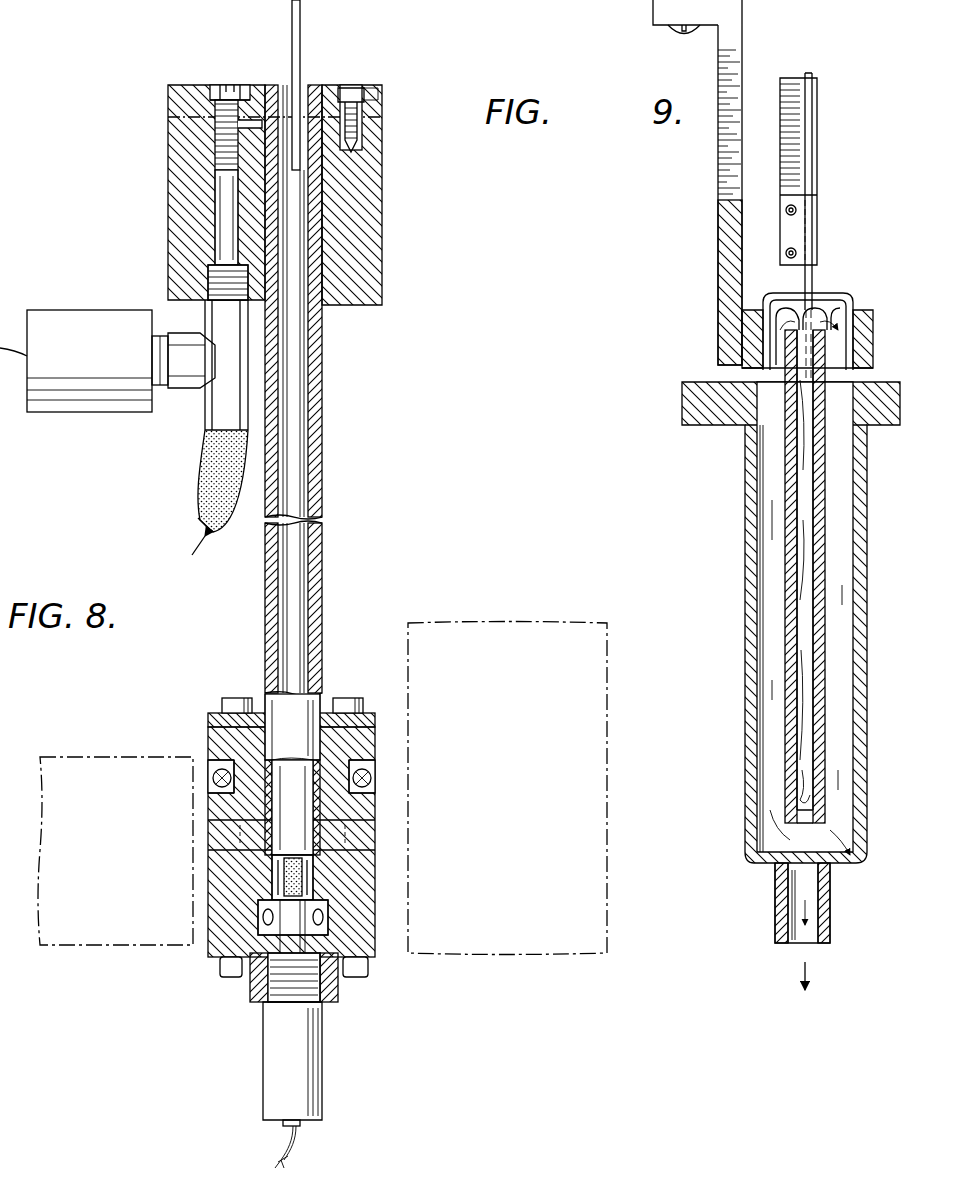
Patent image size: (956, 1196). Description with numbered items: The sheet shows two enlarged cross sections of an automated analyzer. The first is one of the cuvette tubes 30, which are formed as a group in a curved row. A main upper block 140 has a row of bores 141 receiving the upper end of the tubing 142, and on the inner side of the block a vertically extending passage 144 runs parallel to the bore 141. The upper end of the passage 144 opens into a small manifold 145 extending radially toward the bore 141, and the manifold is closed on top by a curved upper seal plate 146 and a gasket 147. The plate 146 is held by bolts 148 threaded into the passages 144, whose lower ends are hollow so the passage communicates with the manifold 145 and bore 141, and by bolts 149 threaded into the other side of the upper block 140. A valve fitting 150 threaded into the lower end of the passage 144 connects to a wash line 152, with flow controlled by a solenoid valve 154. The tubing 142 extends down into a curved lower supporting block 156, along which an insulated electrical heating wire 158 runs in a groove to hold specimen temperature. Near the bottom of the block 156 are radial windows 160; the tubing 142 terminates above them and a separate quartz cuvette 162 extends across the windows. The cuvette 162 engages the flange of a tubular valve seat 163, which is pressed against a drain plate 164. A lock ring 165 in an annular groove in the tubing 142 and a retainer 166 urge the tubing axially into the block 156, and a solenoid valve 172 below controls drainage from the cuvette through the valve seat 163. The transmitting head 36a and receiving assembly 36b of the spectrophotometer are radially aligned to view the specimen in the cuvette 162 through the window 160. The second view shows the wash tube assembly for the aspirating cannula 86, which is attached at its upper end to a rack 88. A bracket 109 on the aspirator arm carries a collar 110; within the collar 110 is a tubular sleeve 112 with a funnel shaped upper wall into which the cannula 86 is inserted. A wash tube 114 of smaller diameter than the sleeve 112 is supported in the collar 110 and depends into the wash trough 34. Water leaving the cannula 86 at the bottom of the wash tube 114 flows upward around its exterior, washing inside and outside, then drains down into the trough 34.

In FIG. 8, the cuvette tubes 30 is at (155, 76).
In FIG. 9, the wash trough 34 is at (752, 500).
In FIG. 8, the transmitting head 36a is at (100, 756).
In FIG. 8, the receiving assembly 36b is at (425, 954).
In FIG. 8, the aspirating cannula 86 is at (300, 38).
In FIG. 9, the aspirating cannula 86 is at (812, 282).
In FIG. 9, the rack 88 is at (798, 194).
In FIG. 9, the bracket 109 is at (722, 235).
In FIG. 9, the collar 110 is at (762, 340).
In FIG. 9, the tubular sleeve 112 is at (840, 302).
In FIG. 9, the wash tube 114 is at (790, 570).
In FIG. 8, the main upper block 140 is at (368, 246).
In FIG. 8, the bores 141 is at (318, 222).
In FIG. 8, the tubing 142 is at (315, 412).
In FIG. 8, the vertically extending passages 144 is at (222, 212).
In FIG. 8, the manifold 145 is at (256, 117).
In FIG. 8, the upper seal plate 146 is at (333, 92).
In FIG. 8, the gasket 147 is at (362, 120).
In FIG. 8, the bolts 148 is at (216, 85).
In FIG. 8, the bolts 149 is at (378, 94).
In FIG. 8, the valve fitting 150 is at (210, 418).
In FIG. 8, the wash line 152 is at (222, 487).
In FIG. 8, the solenoid valve 154 is at (76, 322).
In FIG. 8, the lower supporting block 156 is at (210, 742).
In FIG. 8, the insulated electrical heating wire 158 is at (371, 784).
In FIG. 8, the windows 160 is at (372, 828).
In FIG. 8, the tubular cuvette 162 is at (280, 815).
In FIG. 8, the tubular valve seat 163 is at (308, 860).
In FIG. 8, the drain plate 164 is at (232, 705).
In FIG. 8, the lock ring 165 is at (272, 895).
In FIG. 8, the retainer 166 is at (265, 925).
In FIG. 8, the solenoid valve 172 is at (290, 935).